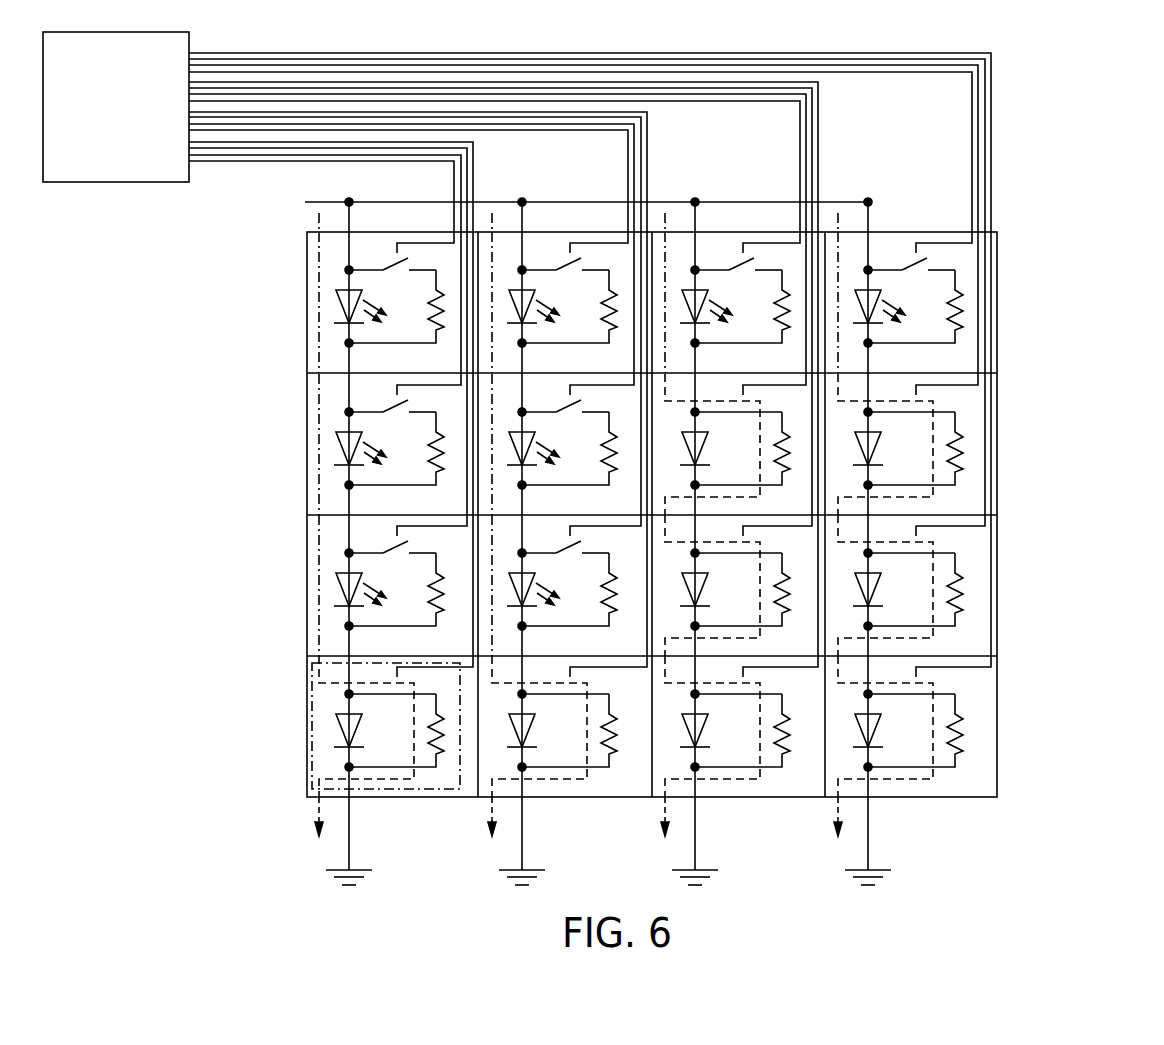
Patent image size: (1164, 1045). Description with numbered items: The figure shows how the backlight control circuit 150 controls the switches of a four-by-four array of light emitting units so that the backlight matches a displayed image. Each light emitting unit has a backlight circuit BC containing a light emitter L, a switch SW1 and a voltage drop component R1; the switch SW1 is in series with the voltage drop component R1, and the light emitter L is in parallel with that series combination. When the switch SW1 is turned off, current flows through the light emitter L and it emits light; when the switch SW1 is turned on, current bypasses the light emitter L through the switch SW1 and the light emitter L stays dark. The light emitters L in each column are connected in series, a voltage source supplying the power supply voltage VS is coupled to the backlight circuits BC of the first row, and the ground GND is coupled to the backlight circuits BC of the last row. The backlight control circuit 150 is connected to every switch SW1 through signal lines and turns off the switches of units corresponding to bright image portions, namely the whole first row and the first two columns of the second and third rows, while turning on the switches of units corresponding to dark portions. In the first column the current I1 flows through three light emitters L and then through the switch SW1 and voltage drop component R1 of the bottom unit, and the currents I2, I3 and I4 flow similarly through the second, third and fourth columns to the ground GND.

The backlight control circuit 150 is at (137, 168).
The switch SW1 is at (392, 692).
The light emitter L is at (340, 730).
The voltage drop component R1 is at (457, 743).
The backlight circuit BC is at (312, 752).
The power supply voltage VS is at (566, 202).
The current I1 is at (320, 833).
The current I2 is at (492, 833).
The current I3 is at (665, 833).
The current I4 is at (837, 832).
The ground GND is at (612, 898).